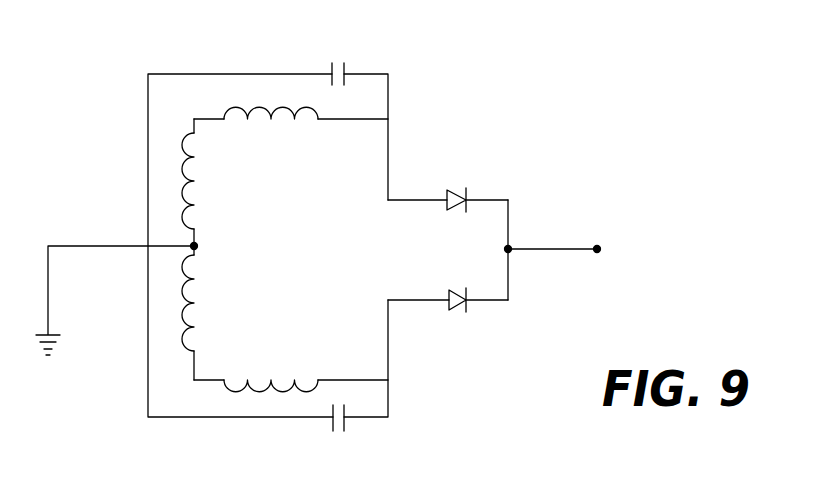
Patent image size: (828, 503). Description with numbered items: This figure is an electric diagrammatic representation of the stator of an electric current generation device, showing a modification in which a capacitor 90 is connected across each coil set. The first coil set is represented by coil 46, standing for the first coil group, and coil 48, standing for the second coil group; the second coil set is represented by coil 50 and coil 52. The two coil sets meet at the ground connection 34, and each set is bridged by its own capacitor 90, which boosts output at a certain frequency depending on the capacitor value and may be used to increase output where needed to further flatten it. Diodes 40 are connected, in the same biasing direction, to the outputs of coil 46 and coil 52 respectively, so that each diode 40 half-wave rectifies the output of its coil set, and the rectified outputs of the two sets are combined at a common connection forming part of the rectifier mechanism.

The capacitor 90 is at (346, 68).
The coil 46 is at (301, 127).
The coil 48 is at (193, 178).
The ground connection 34 is at (197, 246).
The coil 50 is at (195, 322).
The coil 52 is at (272, 380).
The diode 40 is at (459, 188).